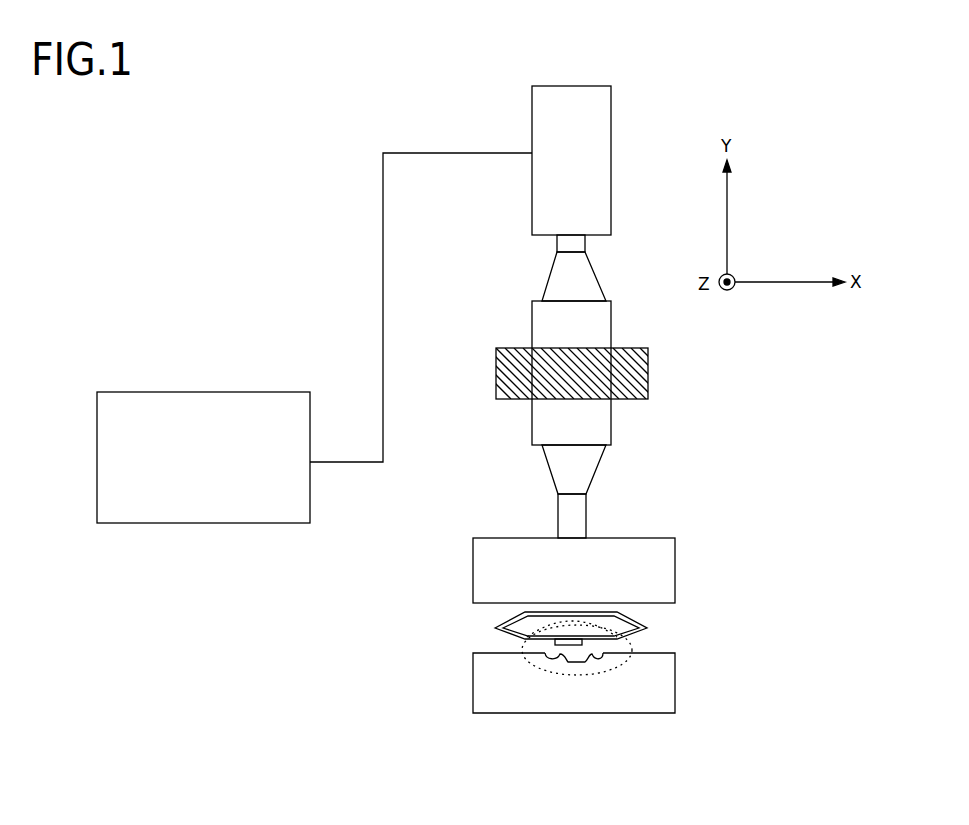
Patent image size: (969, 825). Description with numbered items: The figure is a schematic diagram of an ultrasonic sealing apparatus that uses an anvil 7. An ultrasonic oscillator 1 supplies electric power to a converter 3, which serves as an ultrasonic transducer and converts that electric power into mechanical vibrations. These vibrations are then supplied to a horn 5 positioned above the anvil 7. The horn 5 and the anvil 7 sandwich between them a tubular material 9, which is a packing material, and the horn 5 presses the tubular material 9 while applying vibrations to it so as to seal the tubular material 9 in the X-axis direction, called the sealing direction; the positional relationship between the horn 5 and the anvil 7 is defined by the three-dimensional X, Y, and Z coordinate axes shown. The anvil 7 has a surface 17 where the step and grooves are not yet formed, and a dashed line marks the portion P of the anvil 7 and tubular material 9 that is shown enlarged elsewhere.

The ultrasonic oscillator 1 is at (222, 392).
The converter 3 is at (611, 178).
The horn 5 is at (675, 540).
The anvil 7 is at (675, 683).
The tubular material 9 is at (648, 628).
The surface 17 is at (650, 654).
The portion P is at (537, 668).